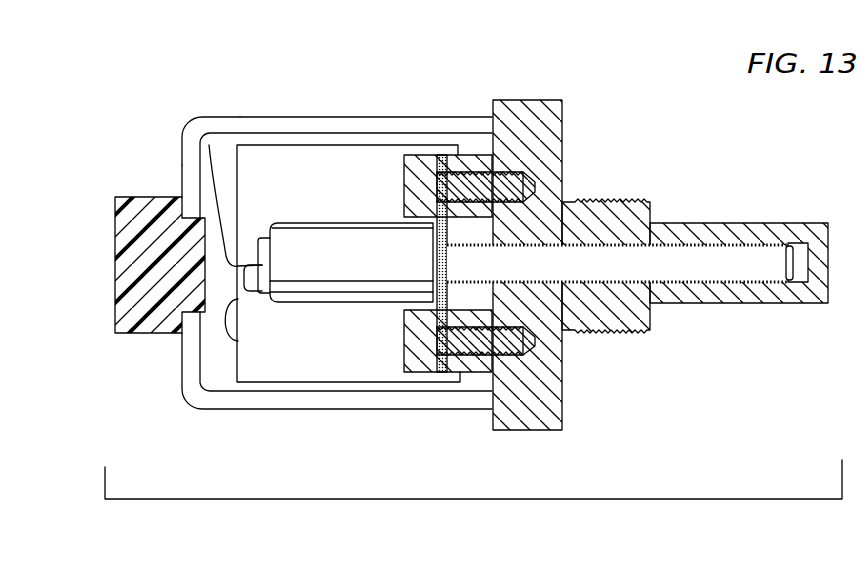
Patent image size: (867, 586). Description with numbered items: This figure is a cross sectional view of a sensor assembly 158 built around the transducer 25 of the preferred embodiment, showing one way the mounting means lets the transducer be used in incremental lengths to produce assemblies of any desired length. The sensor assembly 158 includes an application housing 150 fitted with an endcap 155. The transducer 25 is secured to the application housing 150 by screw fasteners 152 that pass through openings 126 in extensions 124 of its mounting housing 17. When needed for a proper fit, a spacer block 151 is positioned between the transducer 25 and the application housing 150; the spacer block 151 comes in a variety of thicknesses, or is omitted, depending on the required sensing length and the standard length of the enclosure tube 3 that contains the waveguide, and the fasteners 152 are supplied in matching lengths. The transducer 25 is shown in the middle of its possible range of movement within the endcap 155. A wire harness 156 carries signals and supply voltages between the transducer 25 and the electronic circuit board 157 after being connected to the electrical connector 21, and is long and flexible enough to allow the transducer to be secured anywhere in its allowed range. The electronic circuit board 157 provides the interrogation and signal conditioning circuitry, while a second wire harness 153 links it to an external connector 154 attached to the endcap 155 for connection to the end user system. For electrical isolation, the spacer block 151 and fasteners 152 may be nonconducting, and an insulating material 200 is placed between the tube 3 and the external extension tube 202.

The enclosure tube 3 is at (778, 243).
The mounting housing 17 is at (357, 224).
The electrical connector 21 is at (257, 247).
The transducer 25 is at (313, 303).
The extensions 124 is at (442, 373).
The openings 126 is at (437, 343).
The application housing 150 is at (613, 330).
The spacer block 151 is at (481, 155).
The screw fasteners 152 is at (415, 155).
The wire harness 153 is at (212, 150).
The external connector 154 is at (115, 225).
The endcap 155 is at (238, 409).
The wire harness 156 is at (222, 333).
The electronic circuit board 157 is at (293, 143).
The sensor assembly 158 is at (563, 499).
The insulating material 200 is at (610, 243).
The external extension tube 202 is at (723, 233).